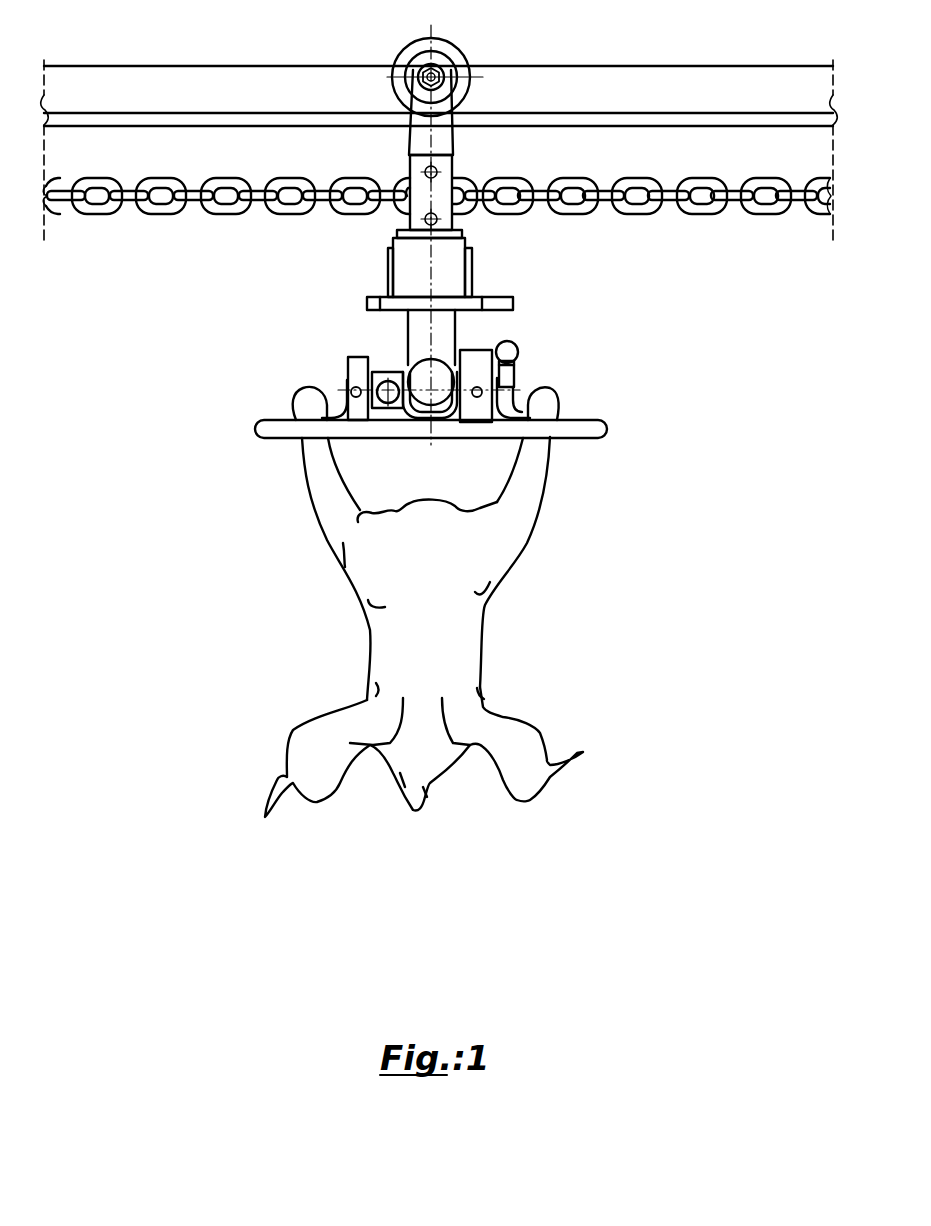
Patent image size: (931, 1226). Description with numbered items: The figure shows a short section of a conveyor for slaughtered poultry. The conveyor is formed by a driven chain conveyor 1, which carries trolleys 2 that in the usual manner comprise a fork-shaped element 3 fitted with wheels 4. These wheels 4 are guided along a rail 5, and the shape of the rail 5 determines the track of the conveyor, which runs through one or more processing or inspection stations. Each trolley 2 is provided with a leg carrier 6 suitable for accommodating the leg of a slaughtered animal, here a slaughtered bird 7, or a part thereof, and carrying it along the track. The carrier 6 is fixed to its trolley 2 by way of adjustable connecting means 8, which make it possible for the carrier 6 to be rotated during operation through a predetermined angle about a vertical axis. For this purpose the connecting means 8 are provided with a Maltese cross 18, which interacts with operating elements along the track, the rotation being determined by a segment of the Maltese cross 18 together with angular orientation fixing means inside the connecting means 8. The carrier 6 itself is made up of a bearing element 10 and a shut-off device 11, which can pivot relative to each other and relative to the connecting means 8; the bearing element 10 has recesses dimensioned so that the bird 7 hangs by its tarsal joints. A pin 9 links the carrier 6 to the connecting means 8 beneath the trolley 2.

The driven chain conveyor 1 is at (767, 213).
The trolley 2 is at (520, 146).
The fork-shaped element 3 is at (410, 132).
The wheels 4 is at (453, 53).
The rail 5 is at (172, 83).
The leg carrier 6 is at (596, 408).
The slaughtered bird 7 is at (488, 577).
The adjustable connecting means 8 is at (402, 268).
The pivot pin rod 9 is at (440, 332).
The bearing element 10 is at (318, 427).
The shut-off device 11 is at (347, 408).
The Maltese cross 18 is at (528, 293).